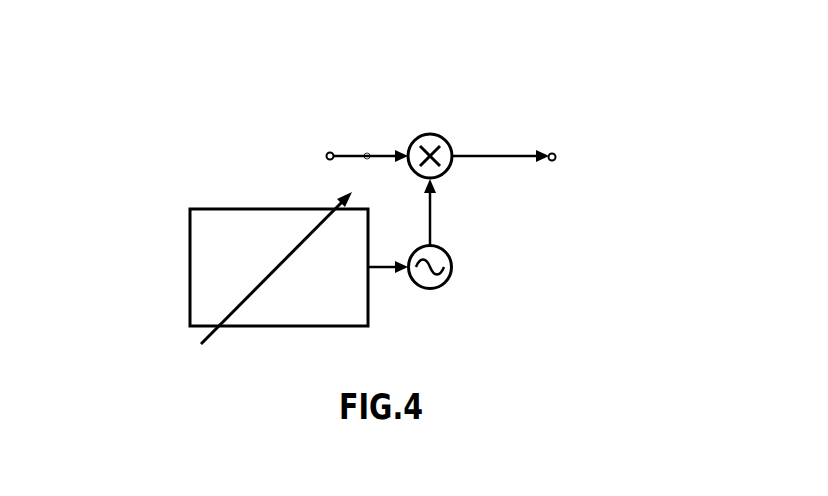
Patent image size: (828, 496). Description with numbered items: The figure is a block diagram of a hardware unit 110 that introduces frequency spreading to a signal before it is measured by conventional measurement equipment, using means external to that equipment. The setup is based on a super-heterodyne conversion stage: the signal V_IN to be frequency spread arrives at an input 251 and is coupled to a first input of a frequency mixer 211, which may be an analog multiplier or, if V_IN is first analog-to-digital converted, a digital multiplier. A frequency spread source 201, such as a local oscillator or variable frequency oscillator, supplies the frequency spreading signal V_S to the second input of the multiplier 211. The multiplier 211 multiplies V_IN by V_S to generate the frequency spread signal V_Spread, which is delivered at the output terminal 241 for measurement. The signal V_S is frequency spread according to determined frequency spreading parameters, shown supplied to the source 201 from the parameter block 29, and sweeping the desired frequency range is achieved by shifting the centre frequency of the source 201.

The frequency spreading parameters block 29 is at (190, 267).
The input terminal 241 is at (330, 152).
The frequency mixer 211 is at (433, 134).
The input 251 is at (553, 153).
The frequency spread source 201 is at (452, 267).
The hardware unit 110 is at (546, 294).